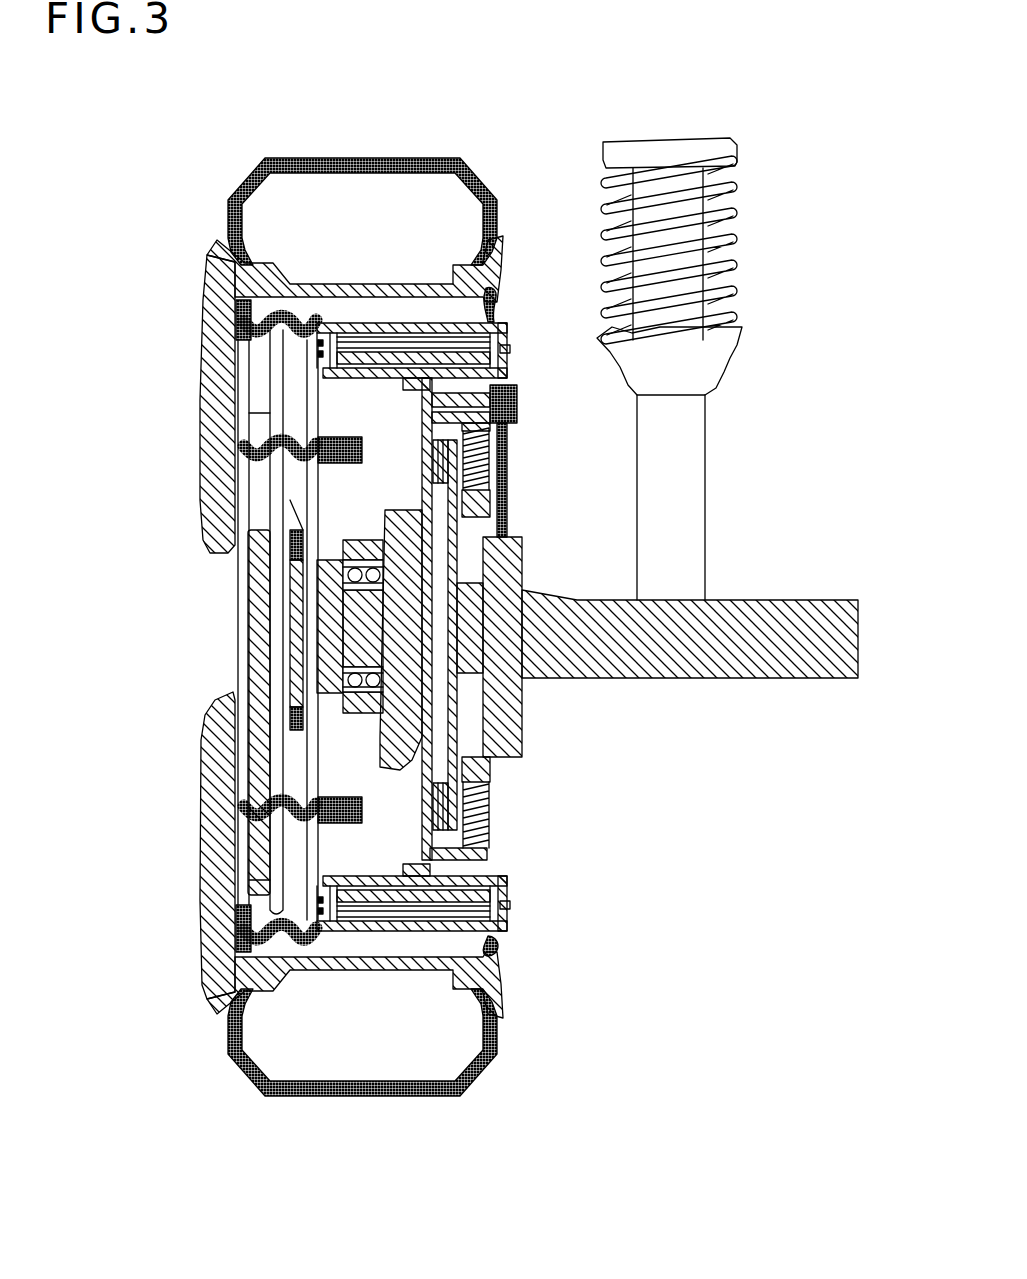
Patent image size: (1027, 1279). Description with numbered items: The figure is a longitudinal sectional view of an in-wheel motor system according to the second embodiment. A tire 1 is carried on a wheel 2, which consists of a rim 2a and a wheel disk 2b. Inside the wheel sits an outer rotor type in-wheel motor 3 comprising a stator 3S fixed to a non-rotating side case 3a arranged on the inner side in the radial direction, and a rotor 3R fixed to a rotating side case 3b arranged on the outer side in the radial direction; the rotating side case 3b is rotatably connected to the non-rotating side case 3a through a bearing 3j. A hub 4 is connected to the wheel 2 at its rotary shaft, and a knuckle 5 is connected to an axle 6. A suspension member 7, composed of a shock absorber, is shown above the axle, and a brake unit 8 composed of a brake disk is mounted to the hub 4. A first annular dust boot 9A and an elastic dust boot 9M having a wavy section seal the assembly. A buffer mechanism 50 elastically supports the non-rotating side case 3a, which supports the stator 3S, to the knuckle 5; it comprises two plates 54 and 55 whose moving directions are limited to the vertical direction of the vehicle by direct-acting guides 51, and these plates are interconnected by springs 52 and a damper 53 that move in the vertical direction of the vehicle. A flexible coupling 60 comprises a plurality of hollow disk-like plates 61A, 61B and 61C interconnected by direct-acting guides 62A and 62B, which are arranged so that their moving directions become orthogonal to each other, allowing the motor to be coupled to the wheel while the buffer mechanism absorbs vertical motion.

The tire 1 is at (430, 153).
The wheel 2 is at (291, 582).
The rim 2a is at (227, 238).
The wheel disk 2b is at (223, 533).
The outer rotor type in-wheel motor 3 is at (451, 570).
The stator 3S is at (367, 360).
The rotor 3R is at (420, 340).
The non-rotating side case 3a is at (505, 372).
The rotating side case 3b is at (493, 325).
The bearing 3j is at (511, 348).
The hub 4 is at (300, 625).
The knuckle 5 is at (413, 762).
The axle 6 is at (755, 612).
The suspension member 7 is at (728, 298).
The brake unit 8 is at (333, 803).
The elastic dust boot 9M is at (233, 313).
The first annular dust boot 9A is at (502, 947).
The buffer mechanism 50 is at (500, 631).
The direct-acting guides 51 is at (420, 467).
The springs 52 is at (490, 493).
The damper 53 is at (518, 572).
The plate 54 is at (446, 470).
The plate 55 is at (455, 512).
The flexible coupling 60 is at (328, 625).
The hollow disk-like plate 61A is at (315, 757).
The hollow disk-like plate 61B is at (268, 480).
The hollow disk-like plate 61C is at (240, 638).
The direct-acting guide 62A is at (294, 652).
The direct-acting guide 62B is at (237, 390).